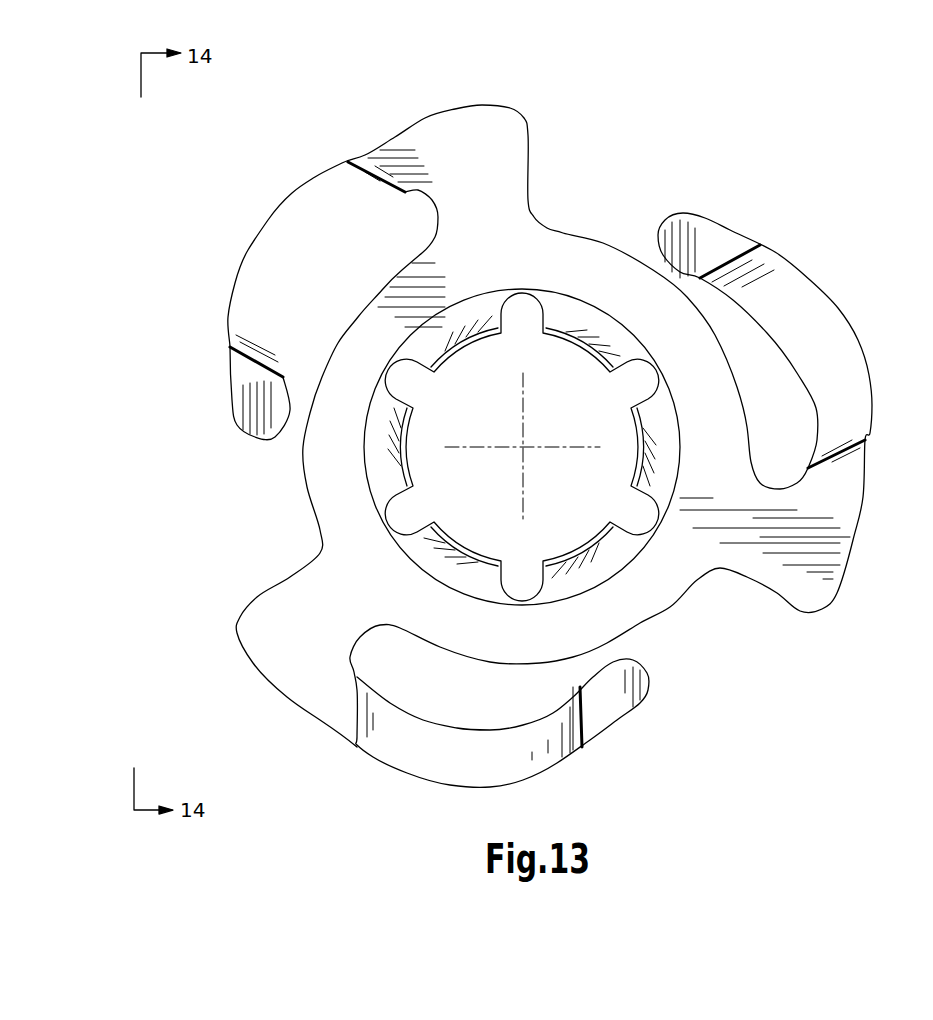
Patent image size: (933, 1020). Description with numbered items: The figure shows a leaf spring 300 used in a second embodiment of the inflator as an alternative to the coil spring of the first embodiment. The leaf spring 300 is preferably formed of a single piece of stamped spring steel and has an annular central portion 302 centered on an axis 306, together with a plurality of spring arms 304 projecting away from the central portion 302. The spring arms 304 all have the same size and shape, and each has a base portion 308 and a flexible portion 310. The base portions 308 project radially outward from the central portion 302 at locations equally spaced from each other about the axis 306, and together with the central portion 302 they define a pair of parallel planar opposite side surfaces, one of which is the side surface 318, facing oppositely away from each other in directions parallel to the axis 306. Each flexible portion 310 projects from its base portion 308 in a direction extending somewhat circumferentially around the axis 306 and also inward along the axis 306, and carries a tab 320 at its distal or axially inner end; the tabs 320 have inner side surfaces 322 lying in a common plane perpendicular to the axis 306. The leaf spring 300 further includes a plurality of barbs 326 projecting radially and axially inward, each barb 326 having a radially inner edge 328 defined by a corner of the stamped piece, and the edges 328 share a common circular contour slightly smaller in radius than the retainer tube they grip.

The leaf spring 300 is at (163, 231).
The central portion 302 is at (595, 236).
The spring arm 304 is at (320, 166).
The axis 306 is at (523, 440).
The base portion 308 is at (260, 623).
The flexible portion 310 is at (260, 237).
The side surface 318 is at (343, 473).
The tab 320 is at (233, 350).
The inner side surface 322 is at (238, 414).
The barb 326 is at (563, 320).
The radially inner edge 328 is at (635, 435).